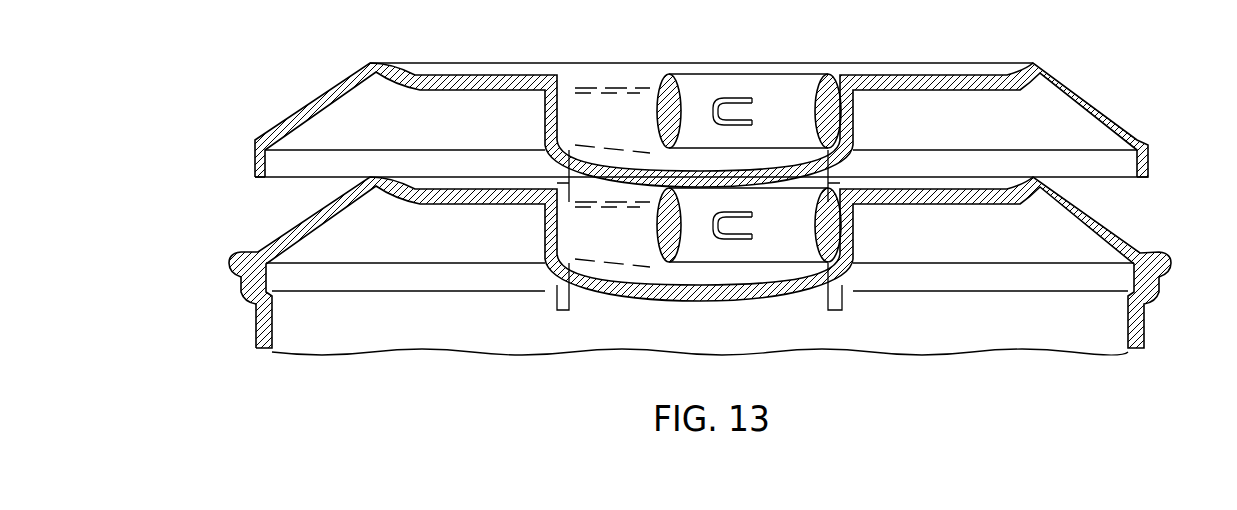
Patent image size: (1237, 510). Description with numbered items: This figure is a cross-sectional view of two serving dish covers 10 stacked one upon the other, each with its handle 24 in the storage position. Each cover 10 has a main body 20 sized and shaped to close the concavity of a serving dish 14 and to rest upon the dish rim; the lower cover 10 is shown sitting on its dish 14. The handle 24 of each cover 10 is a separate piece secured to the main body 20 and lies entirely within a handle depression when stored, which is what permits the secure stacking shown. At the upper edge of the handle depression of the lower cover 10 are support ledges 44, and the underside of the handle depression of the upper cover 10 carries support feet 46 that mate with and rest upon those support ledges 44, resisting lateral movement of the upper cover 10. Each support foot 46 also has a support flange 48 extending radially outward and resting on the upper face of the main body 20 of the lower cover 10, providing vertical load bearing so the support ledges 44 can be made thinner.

The serving dish cover 10 is at (320, 90).
The main body 20 is at (1088, 97).
The handle 24 is at (785, 107).
The support ledge 44 is at (605, 87).
The support foot 46 is at (585, 183).
The support flange 48 is at (558, 170).
The serving dish 14 is at (1013, 335).